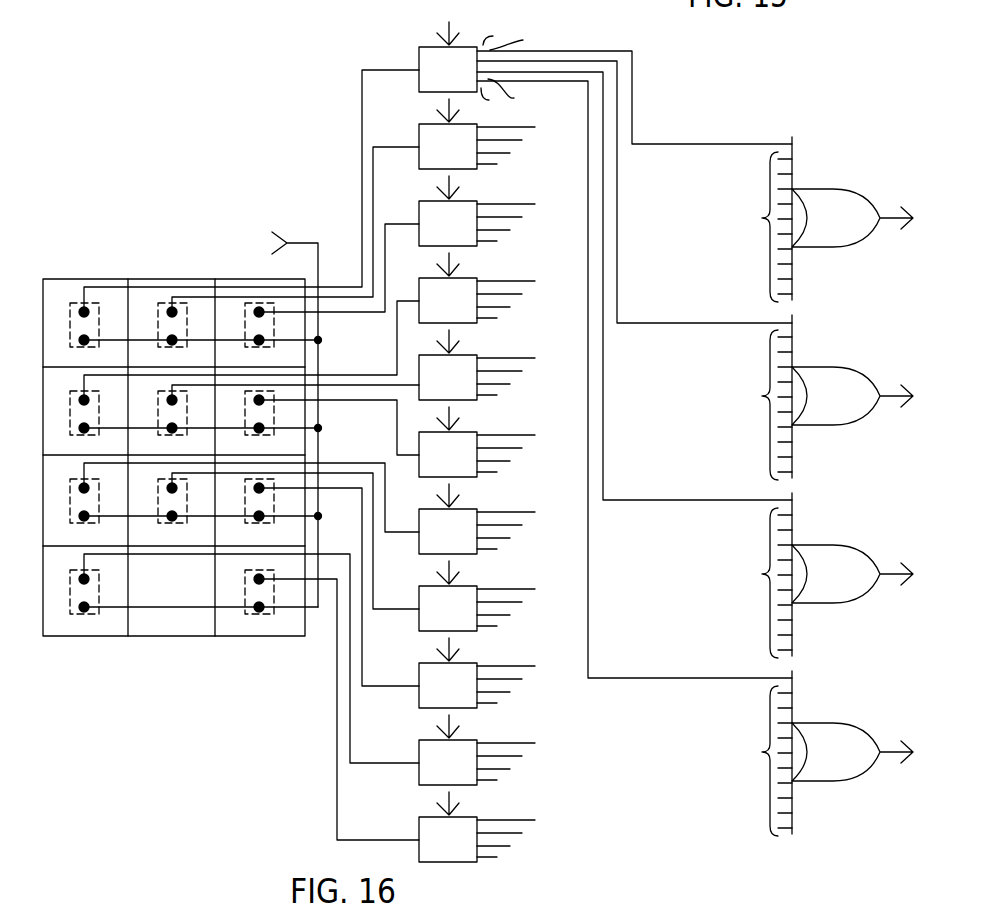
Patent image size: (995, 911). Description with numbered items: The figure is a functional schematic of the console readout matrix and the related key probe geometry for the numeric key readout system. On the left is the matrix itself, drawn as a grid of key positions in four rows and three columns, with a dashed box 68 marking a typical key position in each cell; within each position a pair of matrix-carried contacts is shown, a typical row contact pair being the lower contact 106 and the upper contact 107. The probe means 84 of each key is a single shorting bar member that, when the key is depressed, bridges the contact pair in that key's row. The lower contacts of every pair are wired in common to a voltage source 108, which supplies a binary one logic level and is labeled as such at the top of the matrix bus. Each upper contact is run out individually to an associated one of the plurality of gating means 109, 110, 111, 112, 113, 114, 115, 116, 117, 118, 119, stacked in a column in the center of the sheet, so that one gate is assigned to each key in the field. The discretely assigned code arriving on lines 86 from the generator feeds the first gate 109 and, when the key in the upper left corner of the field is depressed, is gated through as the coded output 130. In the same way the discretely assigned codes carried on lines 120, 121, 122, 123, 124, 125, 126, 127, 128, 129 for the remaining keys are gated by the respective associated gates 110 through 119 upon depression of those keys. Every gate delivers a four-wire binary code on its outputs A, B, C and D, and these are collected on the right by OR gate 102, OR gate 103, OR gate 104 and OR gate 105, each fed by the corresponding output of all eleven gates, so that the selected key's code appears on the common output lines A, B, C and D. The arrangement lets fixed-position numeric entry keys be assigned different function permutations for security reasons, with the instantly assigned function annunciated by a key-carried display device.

The probe means 84 is at (215, 455).
The memory cell 68 is at (75, 282).
The matrix row contact 106 is at (79, 340).
The matrix row contact 107 is at (83, 310).
The voltage source 108 is at (297, 243).
The lines 86 is at (459, 33).
The coded output 130 is at (572, 12).
The gating means 109 is at (419, 53).
The gating means 110 is at (419, 133).
The gating means 111 is at (419, 207).
The gating means 112 is at (419, 292).
The gating means 113 is at (419, 372).
The gating means 114 is at (419, 447).
The gating means 115 is at (419, 525).
The gating means 116 is at (419, 598).
The gating means 117 is at (419, 674).
The gating means 118 is at (419, 748).
The gating means 119 is at (419, 828).
The code lines 120 is at (437, 110).
The code lines 121 is at (459, 187).
The code lines 122 is at (459, 264).
The code lines 123 is at (459, 341).
The code lines 124 is at (459, 418).
The code lines 125 is at (459, 495).
The code lines 126 is at (459, 572).
The code lines 127 is at (459, 649).
The code lines 128 is at (459, 726).
The code lines 129 is at (459, 803).
The OR gate 102 is at (857, 190).
The OR gate 103 is at (857, 368).
The OR gate 104 is at (857, 546).
The OR gate 105 is at (857, 724).